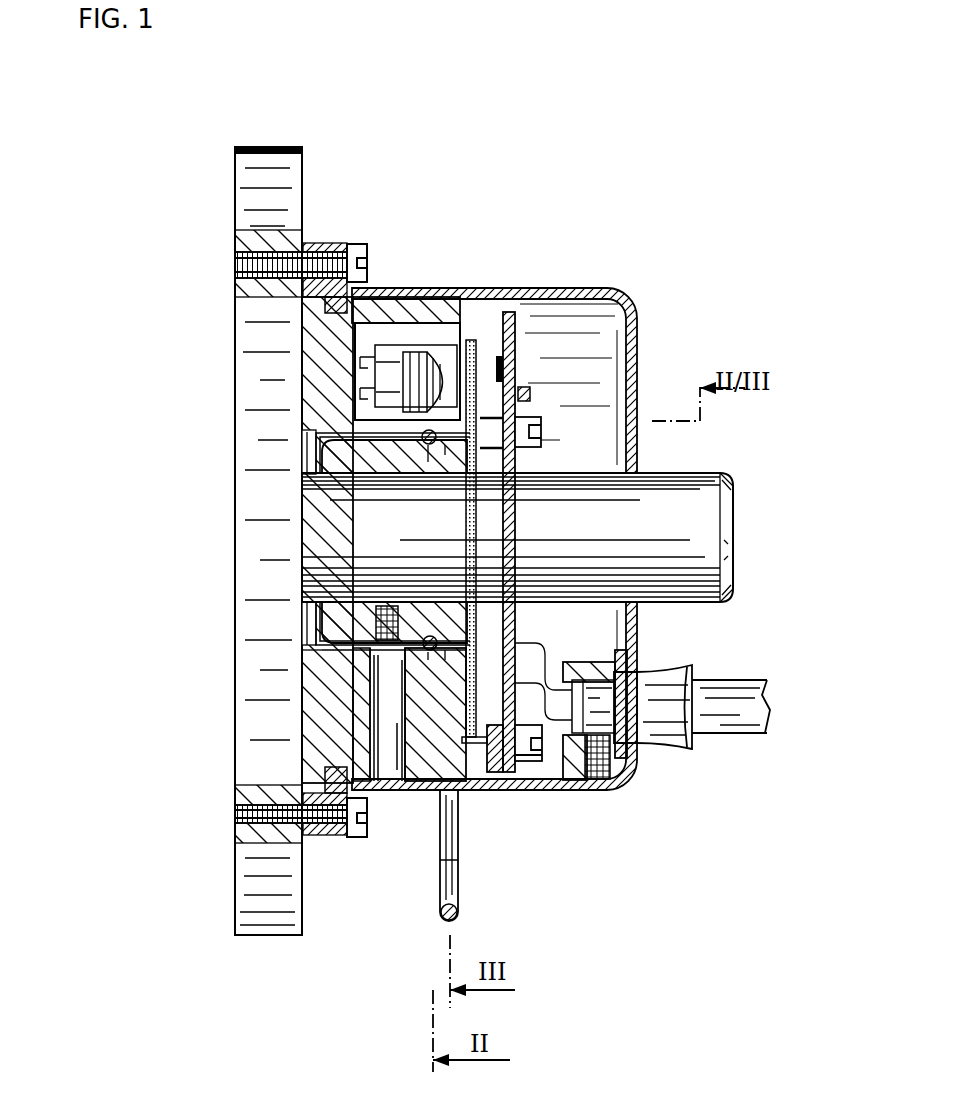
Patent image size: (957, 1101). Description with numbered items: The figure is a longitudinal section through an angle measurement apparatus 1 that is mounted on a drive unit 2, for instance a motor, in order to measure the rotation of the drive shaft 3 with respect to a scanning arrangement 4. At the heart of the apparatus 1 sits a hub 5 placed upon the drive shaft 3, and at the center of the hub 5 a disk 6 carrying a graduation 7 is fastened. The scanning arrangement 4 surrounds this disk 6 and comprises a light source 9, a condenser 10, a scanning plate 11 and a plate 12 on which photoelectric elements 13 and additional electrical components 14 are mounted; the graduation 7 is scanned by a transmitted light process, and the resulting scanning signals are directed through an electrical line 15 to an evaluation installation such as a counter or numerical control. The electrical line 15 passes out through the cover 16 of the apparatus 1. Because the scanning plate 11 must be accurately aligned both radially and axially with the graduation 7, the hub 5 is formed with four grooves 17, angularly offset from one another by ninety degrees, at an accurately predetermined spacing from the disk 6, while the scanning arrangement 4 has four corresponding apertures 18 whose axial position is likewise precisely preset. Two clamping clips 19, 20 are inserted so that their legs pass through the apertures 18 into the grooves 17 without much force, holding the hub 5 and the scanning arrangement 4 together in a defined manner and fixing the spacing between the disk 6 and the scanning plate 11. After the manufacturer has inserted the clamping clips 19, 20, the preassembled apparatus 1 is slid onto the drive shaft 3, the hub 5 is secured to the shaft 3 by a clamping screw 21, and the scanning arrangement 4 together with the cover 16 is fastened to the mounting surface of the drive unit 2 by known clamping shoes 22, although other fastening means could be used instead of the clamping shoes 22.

The angle measurement apparatus 1 is at (637, 302).
The drive unit 2 is at (272, 172).
The drive shaft 3 is at (710, 526).
The scanning arrangement 4 is at (418, 320).
The hub 5 is at (340, 636).
The disk 6 is at (472, 745).
The graduation 7 is at (434, 735).
The light source 9 is at (388, 380).
The condenser 10 is at (426, 366).
The scanning plate 11 is at (473, 400).
The plate 12 is at (512, 368).
The photoelectric elements 13 is at (502, 350).
The electrical components 14 is at (532, 393).
The electrical line 15 is at (744, 725).
The cover 16 is at (597, 776).
The grooves 17 is at (302, 498).
The apertures 18 is at (422, 436).
The clamping clip 19 is at (420, 652).
The clamping clip 20 is at (454, 882).
The clamping screw 21 is at (362, 612).
The clamping shoes 22 is at (316, 250).